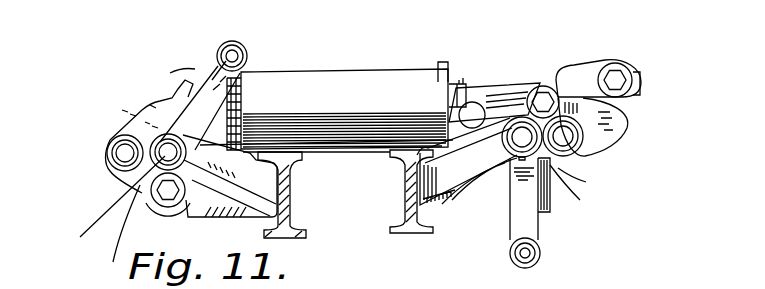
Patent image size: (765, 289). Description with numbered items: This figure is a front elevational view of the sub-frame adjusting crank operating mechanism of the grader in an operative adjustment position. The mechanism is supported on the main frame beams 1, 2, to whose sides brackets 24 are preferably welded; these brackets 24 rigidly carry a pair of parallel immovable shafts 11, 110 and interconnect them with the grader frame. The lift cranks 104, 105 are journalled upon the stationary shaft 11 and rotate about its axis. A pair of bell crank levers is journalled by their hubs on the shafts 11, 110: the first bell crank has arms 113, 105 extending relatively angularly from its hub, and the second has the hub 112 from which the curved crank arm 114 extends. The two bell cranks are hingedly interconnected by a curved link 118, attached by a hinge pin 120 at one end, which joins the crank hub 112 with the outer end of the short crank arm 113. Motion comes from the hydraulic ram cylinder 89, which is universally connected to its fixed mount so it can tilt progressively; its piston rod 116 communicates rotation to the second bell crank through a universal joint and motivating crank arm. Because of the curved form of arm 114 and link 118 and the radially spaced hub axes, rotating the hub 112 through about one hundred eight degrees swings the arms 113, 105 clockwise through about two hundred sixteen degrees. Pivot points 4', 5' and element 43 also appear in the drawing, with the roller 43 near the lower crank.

The ram cylinder 89 is at (310, 78).
The pivot 4' is at (221, 87).
The lift crank 104 is at (164, 79).
The crank arm 114 is at (140, 117).
The hub 112 is at (107, 148).
The immovable shaft 110 is at (122, 159).
The stationary shaft 11 is at (332, 207).
The crank arm 113 is at (112, 231).
The curved link 118 is at (190, 182).
The bracket 24 is at (233, 238).
The main frame beam 1 is at (291, 198).
The main frame beam 2 is at (404, 182).
The piston rod 116 is at (512, 85).
The hinge pin 120 is at (546, 101).
The roller 43 is at (552, 200).
The lift crank arm 105 is at (528, 227).
The pivot 5' is at (548, 253).